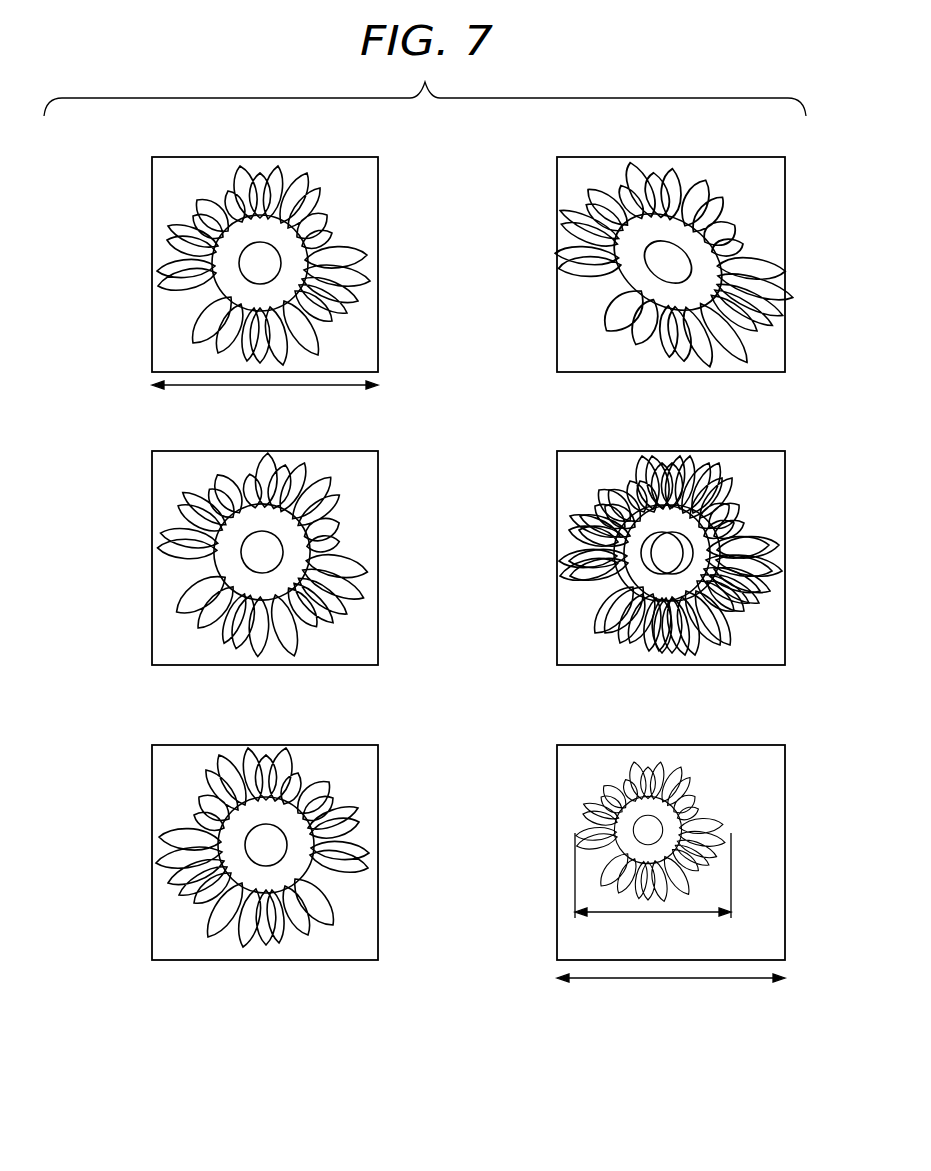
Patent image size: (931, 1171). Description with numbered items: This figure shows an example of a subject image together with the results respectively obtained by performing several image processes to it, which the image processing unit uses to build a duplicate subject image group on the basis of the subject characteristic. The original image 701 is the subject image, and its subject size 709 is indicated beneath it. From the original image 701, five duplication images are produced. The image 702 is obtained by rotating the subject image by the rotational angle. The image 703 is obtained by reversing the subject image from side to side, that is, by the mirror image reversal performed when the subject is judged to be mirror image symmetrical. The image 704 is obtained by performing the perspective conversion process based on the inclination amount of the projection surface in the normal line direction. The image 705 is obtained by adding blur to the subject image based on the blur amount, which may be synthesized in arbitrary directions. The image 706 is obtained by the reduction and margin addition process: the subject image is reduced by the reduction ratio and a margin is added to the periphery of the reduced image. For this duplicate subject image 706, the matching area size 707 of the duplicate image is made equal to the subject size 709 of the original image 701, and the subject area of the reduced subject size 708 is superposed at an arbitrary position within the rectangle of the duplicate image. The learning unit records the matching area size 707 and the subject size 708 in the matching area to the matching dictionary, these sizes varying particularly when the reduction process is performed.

The original image 701 is at (152, 241).
The rotated image 702 is at (152, 520).
The mirror image reversed image 703 is at (152, 846).
The perspective converted image 704 is at (557, 238).
The blurred image 705 is at (557, 520).
The reduced duplicate subject image 706 is at (557, 818).
The matching area size 707 is at (735, 980).
The subject size 708 is at (680, 914).
The subject size of the subject image 709 is at (297, 386).